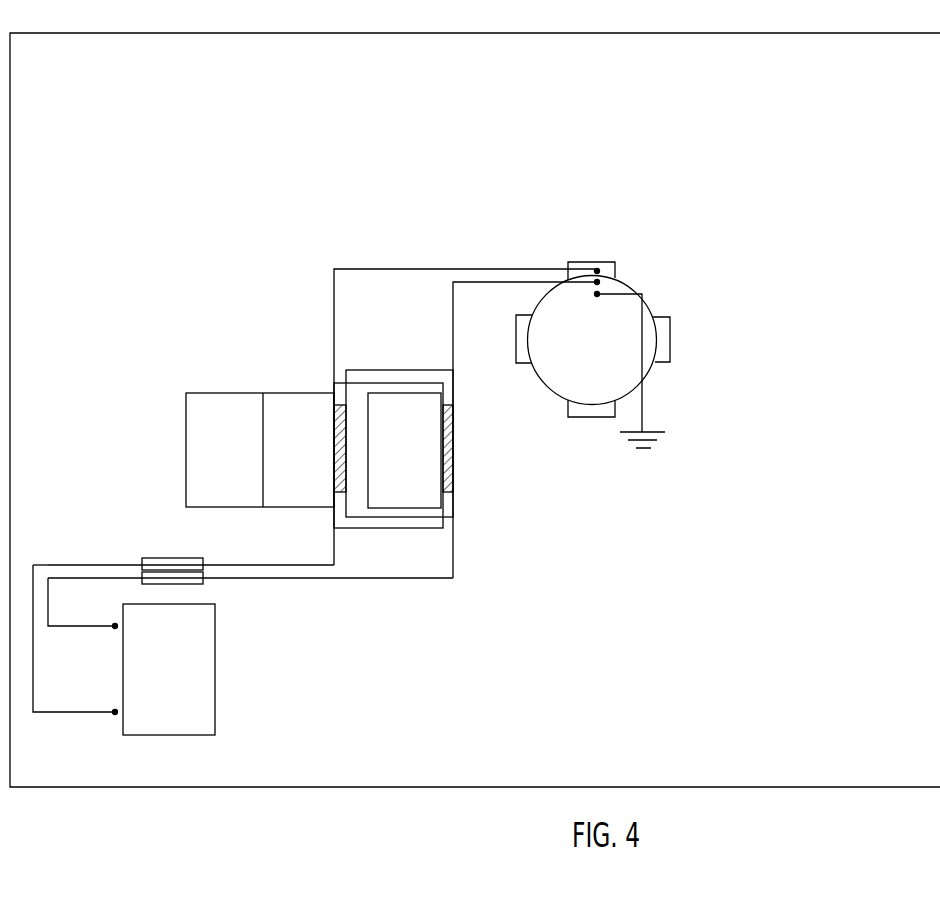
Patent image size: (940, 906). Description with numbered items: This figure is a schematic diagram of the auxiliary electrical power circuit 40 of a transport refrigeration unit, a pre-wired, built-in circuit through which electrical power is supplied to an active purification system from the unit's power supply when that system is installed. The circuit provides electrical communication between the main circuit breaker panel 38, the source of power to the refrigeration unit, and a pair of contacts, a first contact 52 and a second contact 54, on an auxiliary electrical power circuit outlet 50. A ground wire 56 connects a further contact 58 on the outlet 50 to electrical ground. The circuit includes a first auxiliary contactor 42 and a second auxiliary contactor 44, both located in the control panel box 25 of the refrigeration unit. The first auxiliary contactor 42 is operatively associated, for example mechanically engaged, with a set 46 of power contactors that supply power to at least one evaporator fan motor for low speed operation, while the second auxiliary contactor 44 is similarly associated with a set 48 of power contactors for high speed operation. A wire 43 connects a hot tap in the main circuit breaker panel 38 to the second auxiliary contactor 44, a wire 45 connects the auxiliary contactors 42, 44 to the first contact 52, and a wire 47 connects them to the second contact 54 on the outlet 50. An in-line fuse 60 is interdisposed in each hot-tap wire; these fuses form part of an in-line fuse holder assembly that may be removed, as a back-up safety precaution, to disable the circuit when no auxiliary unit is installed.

The control panel box 25 is at (208, 788).
The main circuit breaker panel 38 is at (175, 737).
The auxiliary electrical power circuit 40 is at (254, 545).
The first auxiliary contactor 42 is at (333, 439).
The wire 43 is at (268, 579).
The second auxiliary contactor 44 is at (455, 432).
The wire 45 is at (336, 301).
The set of power contactors 46 is at (312, 392).
The wire 47 is at (452, 303).
The set of power contactors 48 is at (427, 453).
The auxiliary electrical power circuit outlet 50 is at (660, 364).
The first contact 52 is at (599, 269).
The second contact 54 is at (600, 281).
The ground wire 56 is at (632, 297).
The contact 58 is at (597, 297).
The in-line fuse 60 is at (190, 557).